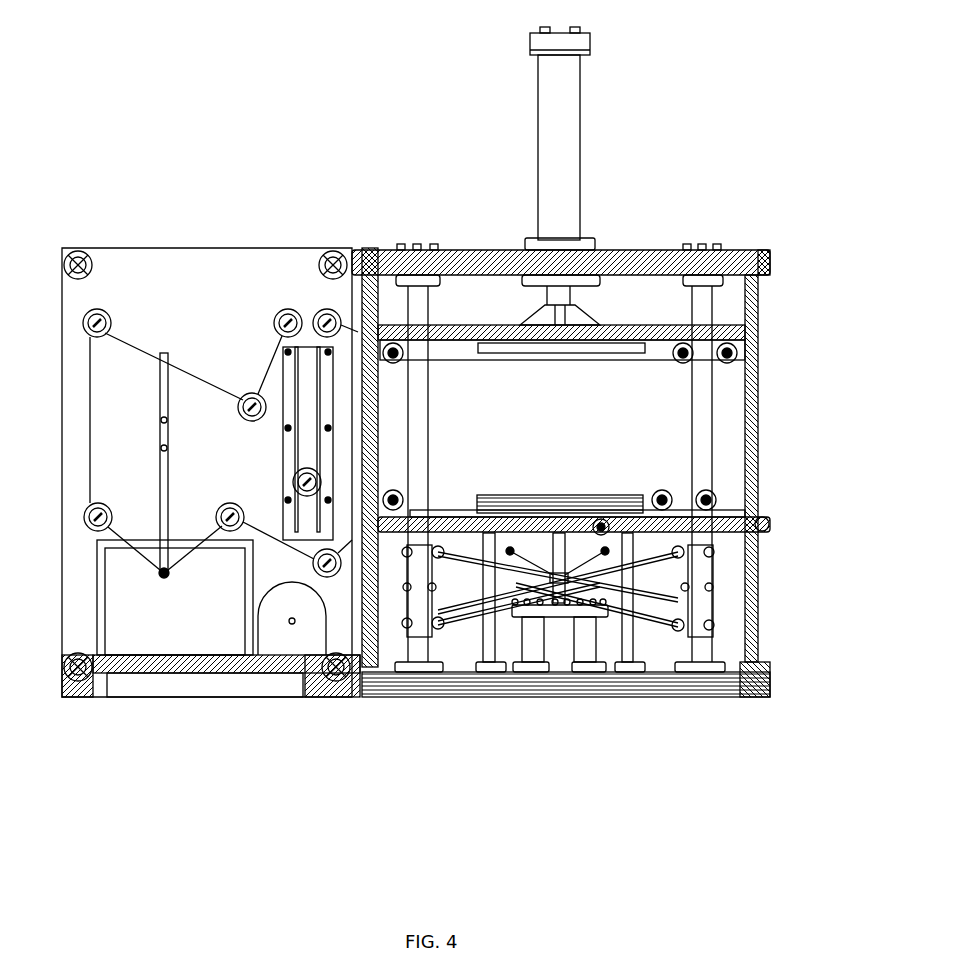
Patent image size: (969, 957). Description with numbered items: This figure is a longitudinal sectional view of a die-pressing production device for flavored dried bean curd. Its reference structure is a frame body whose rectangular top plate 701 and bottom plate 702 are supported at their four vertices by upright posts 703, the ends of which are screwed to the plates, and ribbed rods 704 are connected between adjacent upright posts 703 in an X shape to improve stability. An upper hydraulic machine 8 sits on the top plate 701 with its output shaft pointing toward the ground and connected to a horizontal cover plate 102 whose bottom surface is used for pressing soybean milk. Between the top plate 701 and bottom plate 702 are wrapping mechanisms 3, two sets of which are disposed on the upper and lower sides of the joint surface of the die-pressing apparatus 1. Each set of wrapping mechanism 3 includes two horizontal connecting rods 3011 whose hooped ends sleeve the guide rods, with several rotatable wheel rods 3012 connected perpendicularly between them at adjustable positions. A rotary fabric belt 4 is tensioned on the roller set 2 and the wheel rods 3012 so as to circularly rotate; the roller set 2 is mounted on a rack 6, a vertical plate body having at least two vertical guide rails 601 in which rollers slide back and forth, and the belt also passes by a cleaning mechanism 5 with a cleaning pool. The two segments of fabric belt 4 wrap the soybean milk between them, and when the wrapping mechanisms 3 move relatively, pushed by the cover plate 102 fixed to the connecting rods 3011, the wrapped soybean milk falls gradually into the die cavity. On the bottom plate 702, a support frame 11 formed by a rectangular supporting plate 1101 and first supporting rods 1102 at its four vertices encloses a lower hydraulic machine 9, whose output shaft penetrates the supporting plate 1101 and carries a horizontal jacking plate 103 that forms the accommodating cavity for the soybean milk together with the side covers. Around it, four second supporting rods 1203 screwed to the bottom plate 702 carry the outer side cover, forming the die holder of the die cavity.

The die-pressing apparatus 1 is at (463, 293).
The roller set 2 is at (225, 547).
The wrapping mechanism 3 is at (611, 332).
The connecting rod 3011 is at (730, 327).
The wheel rod 3012 is at (702, 353).
The fabric belt 4 is at (133, 560).
The cleaning mechanism 5 is at (240, 640).
The rack 6 is at (220, 438).
The guide rail 601 is at (163, 353).
The top plate 701 is at (698, 245).
The bottom plate 702 is at (530, 690).
The upright post 703 is at (375, 643).
The ribbed rod 704 is at (465, 630).
The upper hydraulic machine 8 is at (570, 170).
The lower hydraulic machine 9 is at (560, 640).
The cover plate 102 is at (585, 345).
The jacking plate 103 is at (633, 645).
The support frame 11 is at (594, 698).
The supporting plate 1101 is at (575, 675).
The first supporting rod 1102 is at (580, 620).
The second supporting rod 1203 is at (680, 653).